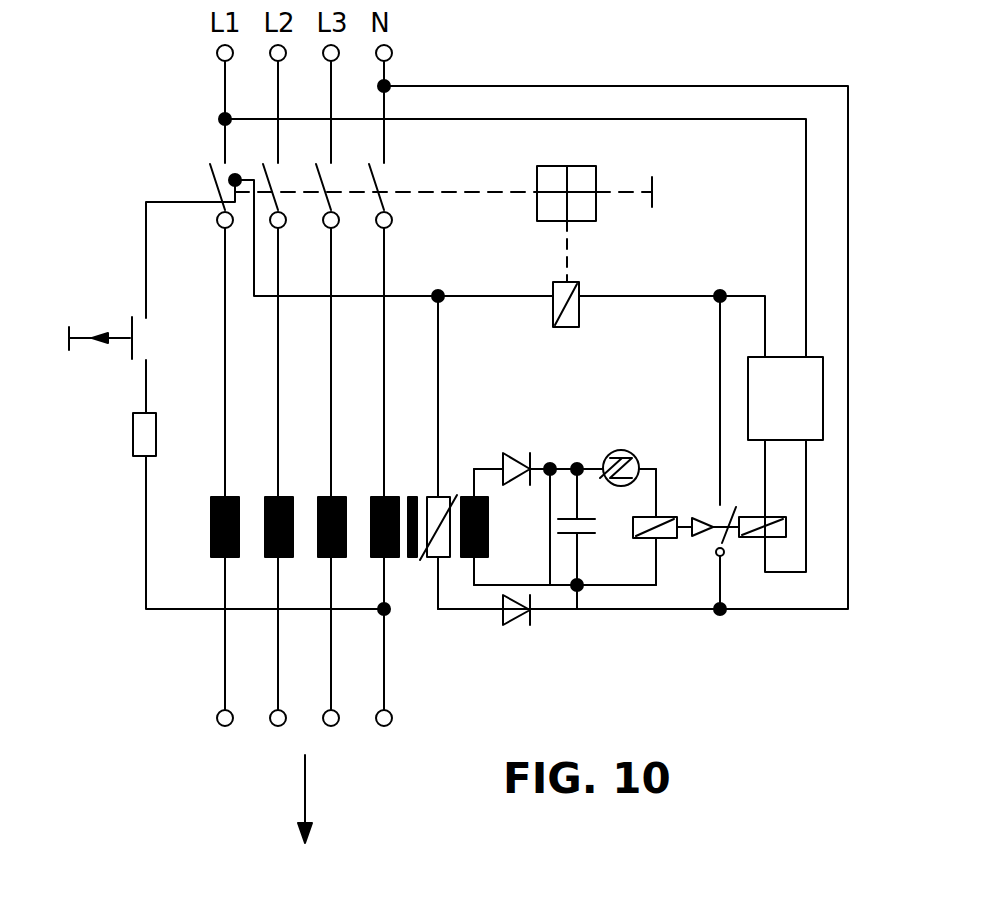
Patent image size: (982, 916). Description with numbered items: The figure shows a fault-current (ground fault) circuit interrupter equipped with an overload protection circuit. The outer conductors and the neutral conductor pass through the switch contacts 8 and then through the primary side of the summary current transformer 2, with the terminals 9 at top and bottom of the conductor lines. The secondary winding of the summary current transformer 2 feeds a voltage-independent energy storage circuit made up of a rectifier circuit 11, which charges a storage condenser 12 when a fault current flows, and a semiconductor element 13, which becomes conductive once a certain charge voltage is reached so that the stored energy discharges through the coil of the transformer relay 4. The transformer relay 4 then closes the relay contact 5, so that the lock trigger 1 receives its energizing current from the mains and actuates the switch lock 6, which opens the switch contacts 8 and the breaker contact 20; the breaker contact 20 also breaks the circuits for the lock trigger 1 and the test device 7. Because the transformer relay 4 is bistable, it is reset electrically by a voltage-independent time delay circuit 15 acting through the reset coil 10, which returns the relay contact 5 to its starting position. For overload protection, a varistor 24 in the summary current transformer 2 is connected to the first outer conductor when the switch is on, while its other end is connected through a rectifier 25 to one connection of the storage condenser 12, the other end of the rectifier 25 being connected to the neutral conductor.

The lock trigger 1 is at (580, 291).
The summary current transformer 2 is at (211, 520).
The transformer relay 4 is at (668, 538).
The relay contact 5 is at (728, 538).
The switch lock 6 is at (577, 166).
The test device 7 is at (100, 345).
The switch contacts 8 is at (208, 180).
The terminals 9 is at (392, 53).
The reset coil 10 is at (786, 521).
The rectifier circuit 11 is at (517, 475).
The storage condenser 12 is at (582, 537).
The semiconductor element 13 is at (617, 492).
The time delay circuit 15 is at (819, 400).
The breaker contact 20 is at (233, 176).
The varistor 24 is at (450, 557).
The rectifier 25 is at (517, 612).